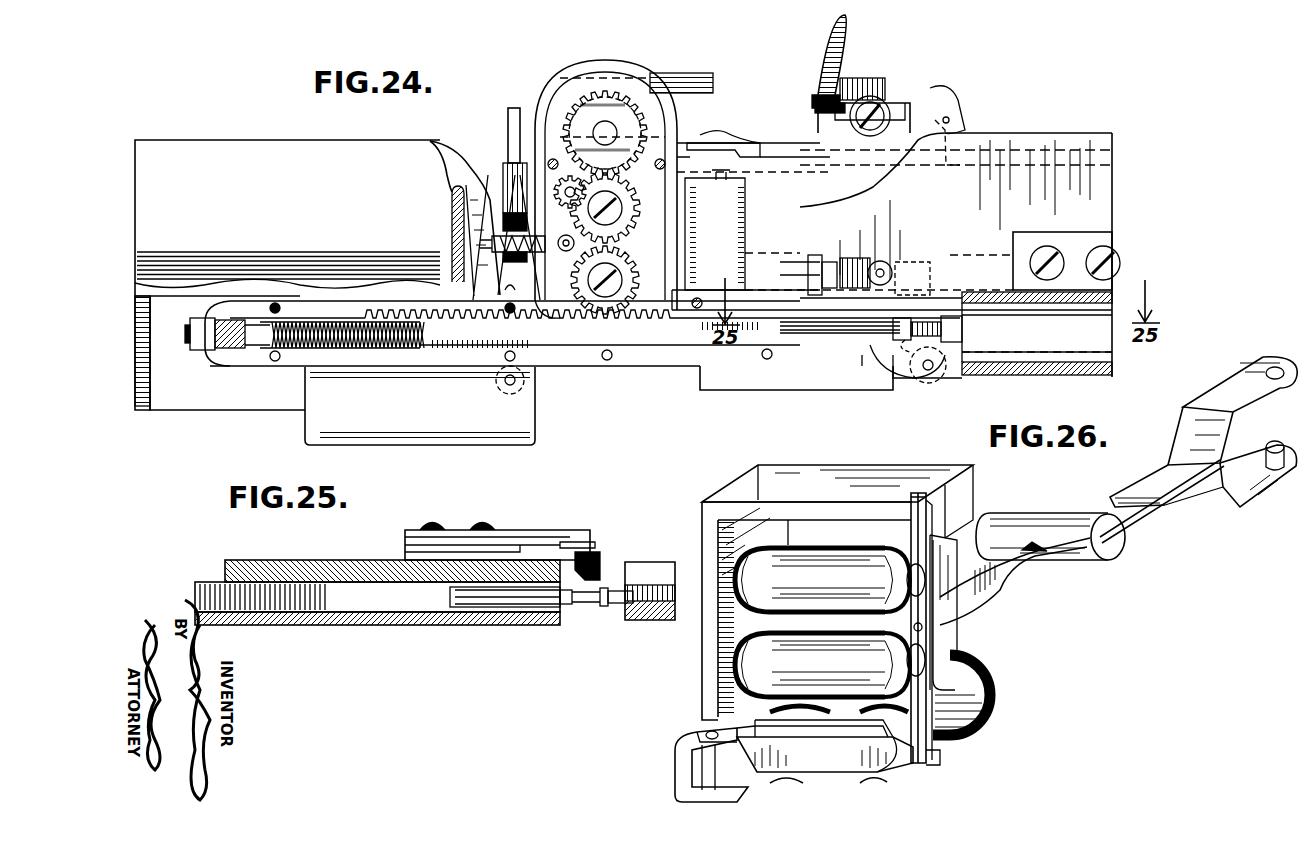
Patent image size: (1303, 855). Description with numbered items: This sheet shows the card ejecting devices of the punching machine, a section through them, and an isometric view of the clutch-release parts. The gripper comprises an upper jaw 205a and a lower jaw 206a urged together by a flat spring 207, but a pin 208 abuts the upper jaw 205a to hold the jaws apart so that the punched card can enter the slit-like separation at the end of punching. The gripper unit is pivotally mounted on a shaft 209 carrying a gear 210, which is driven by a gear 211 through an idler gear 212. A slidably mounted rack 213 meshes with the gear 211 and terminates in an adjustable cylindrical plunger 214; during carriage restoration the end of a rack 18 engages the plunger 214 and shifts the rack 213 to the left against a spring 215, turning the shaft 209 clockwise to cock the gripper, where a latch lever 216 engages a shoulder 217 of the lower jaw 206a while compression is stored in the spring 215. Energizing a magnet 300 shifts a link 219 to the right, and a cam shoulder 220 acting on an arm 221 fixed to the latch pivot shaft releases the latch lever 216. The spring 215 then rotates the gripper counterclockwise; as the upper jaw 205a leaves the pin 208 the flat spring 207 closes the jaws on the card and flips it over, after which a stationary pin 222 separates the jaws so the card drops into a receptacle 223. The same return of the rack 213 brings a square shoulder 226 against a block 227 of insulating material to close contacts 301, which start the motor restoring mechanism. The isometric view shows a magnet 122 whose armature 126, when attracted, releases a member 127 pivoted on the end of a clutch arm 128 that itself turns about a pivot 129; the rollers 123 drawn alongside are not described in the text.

In FIG. 24, the receptacle 223 is at (287, 275).
In FIG. 24, the cam shoulder 220 is at (470, 215).
In FIG. 24, the rack 213 is at (632, 345).
In FIG. 25, the rack 213 is at (342, 598).
In FIG. 24, the spring 215 is at (295, 348).
In FIG. 24, the gear 210 is at (615, 92).
In FIG. 24, the shaft 209 is at (605, 133).
In FIG. 24, the idler gear 212 is at (640, 220).
In FIG. 24, the gear 211 is at (640, 258).
In FIG. 24, the stationary pin 222 is at (508, 108).
In FIG. 24, the latch lever 216 is at (503, 128).
In FIG. 24, the arm 221 is at (498, 170).
In FIG. 24, the shoulder 217 is at (540, 118).
In FIG. 24, the flat spring 207 is at (716, 135).
In FIG. 24, the upper jaw 205a is at (790, 130).
In FIG. 24, the lower jaw 206a is at (770, 164).
In FIG. 24, the pin 208 is at (715, 236).
In FIG. 24, the link 219 is at (775, 262).
In FIG. 24, the magnet 300 is at (978, 257).
In FIG. 24, the adjustable cylindrical plunger 214 is at (940, 335).
In FIG. 25, the square shoulder 226 is at (457, 605).
In FIG. 25, the contacts 301 is at (595, 540).
In FIG. 25, the block of insulating material 227 is at (600, 565).
In FIG. 25, the rack 18 is at (662, 582).
In FIG. 26, the rollers 123 is at (838, 548).
In FIG. 26, the member 127 is at (922, 660).
In FIG. 26, the armature 126 is at (855, 758).
In FIG. 26, the magnet 122 is at (735, 725).
In FIG. 26, the pivot 129 is at (1085, 510).
In FIG. 26, the clutch arm 128 is at (955, 612).